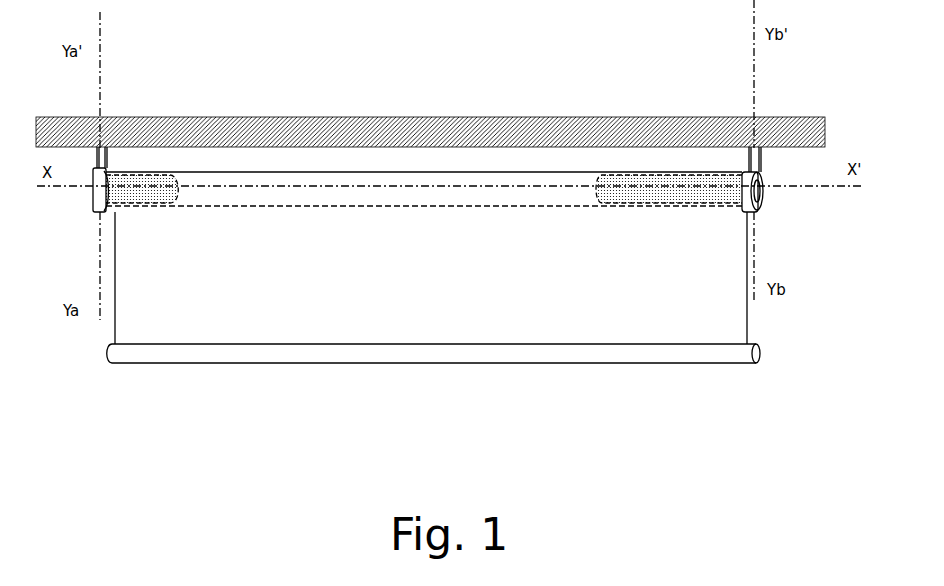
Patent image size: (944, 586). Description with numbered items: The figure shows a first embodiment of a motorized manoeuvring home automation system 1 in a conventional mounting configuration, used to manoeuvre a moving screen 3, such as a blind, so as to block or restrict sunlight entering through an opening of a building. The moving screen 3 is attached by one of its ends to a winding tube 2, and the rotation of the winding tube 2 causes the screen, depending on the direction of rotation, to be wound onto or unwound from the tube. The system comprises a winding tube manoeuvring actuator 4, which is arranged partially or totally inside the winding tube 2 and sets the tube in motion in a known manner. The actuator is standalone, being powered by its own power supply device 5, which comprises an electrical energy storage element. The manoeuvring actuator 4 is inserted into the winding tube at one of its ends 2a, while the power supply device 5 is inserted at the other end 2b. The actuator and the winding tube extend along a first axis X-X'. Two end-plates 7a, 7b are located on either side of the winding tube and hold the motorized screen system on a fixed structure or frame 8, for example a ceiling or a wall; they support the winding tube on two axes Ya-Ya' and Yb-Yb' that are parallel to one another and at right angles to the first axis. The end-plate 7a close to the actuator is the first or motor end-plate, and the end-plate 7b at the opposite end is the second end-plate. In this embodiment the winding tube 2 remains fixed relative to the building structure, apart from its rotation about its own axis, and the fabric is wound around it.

The motorized manoeuvring home automation system 1 is at (451, 320).
The winding tube 2 is at (503, 183).
The end of winding tube 2a is at (118, 213).
The end of winding tube 2b is at (733, 215).
The moving screen 3 is at (369, 308).
The winding tube manoeuvring actuator 4 is at (147, 190).
The power supply device 5 is at (660, 190).
The first end-plate 7a is at (95, 176).
The second end-plate 7b is at (762, 172).
The fixed structure or frame 8 is at (299, 133).